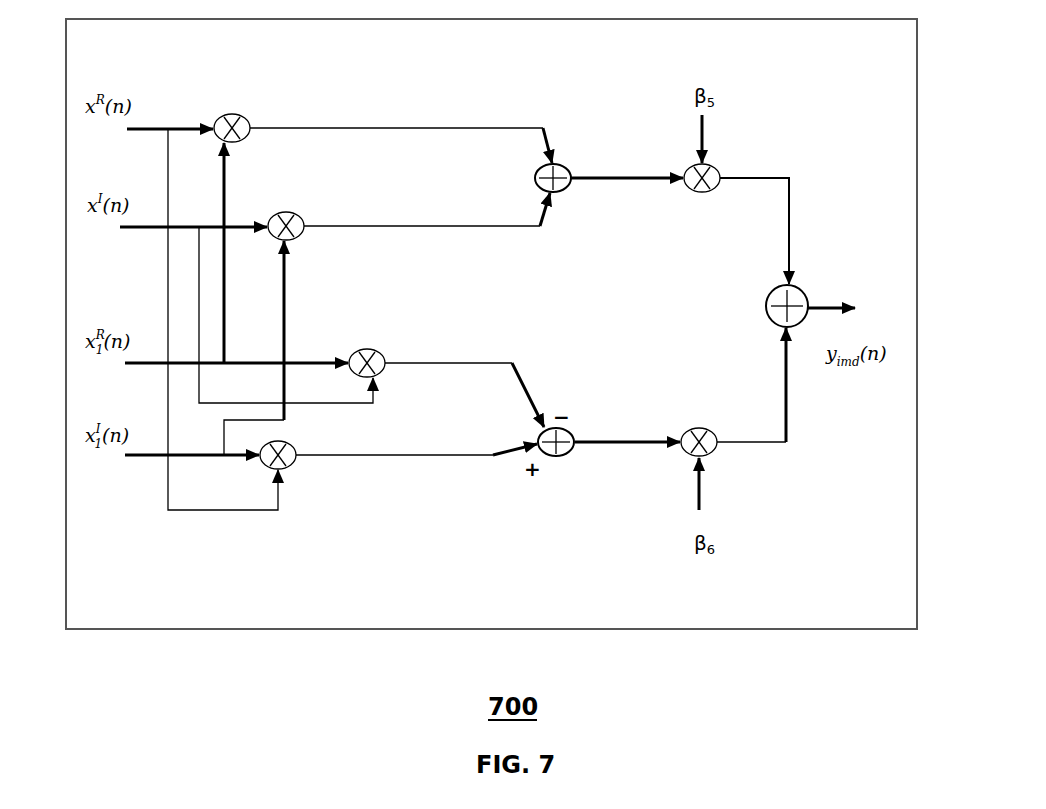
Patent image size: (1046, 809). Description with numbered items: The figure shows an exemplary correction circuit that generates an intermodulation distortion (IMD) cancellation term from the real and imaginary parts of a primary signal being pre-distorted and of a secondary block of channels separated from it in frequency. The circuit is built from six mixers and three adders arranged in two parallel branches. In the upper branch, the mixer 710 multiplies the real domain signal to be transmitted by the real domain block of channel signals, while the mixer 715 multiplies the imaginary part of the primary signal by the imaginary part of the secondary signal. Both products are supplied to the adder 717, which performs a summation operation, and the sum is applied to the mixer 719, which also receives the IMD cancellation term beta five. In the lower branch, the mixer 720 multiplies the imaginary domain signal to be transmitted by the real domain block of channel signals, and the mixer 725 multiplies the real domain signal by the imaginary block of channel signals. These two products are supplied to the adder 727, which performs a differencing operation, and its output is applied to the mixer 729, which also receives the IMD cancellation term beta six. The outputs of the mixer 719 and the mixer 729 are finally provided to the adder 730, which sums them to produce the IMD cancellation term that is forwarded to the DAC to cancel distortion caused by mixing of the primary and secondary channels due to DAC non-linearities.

The mixer 710 is at (243, 105).
The mixer 715 is at (312, 208).
The adder 717 is at (572, 170).
The mixer 719 is at (720, 165).
The mixer 720 is at (387, 347).
The mixer 725 is at (290, 470).
The adder 727 is at (575, 422).
The mixer 729 is at (712, 422).
The adder 730 is at (813, 287).